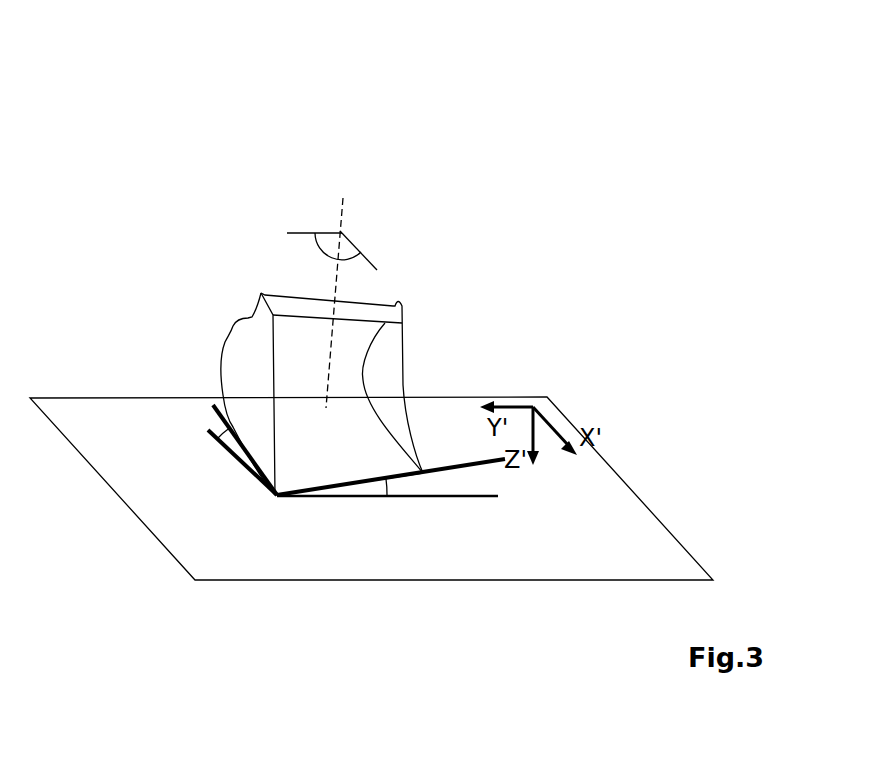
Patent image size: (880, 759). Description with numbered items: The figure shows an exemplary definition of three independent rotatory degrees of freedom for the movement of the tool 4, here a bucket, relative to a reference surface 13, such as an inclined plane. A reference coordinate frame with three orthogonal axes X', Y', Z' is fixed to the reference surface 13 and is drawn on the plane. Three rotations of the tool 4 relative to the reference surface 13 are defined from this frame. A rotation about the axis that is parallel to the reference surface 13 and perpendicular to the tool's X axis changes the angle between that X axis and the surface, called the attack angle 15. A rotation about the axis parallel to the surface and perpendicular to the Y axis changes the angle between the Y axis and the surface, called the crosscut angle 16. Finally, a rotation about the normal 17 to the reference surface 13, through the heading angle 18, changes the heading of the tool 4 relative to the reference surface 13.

The tool 4 is at (247, 355).
The reference surface 13 is at (650, 560).
The attack angle 15 is at (223, 430).
The crosscut angle 16 is at (378, 490).
The normal 17 is at (340, 212).
The heading angle 18 is at (342, 235).